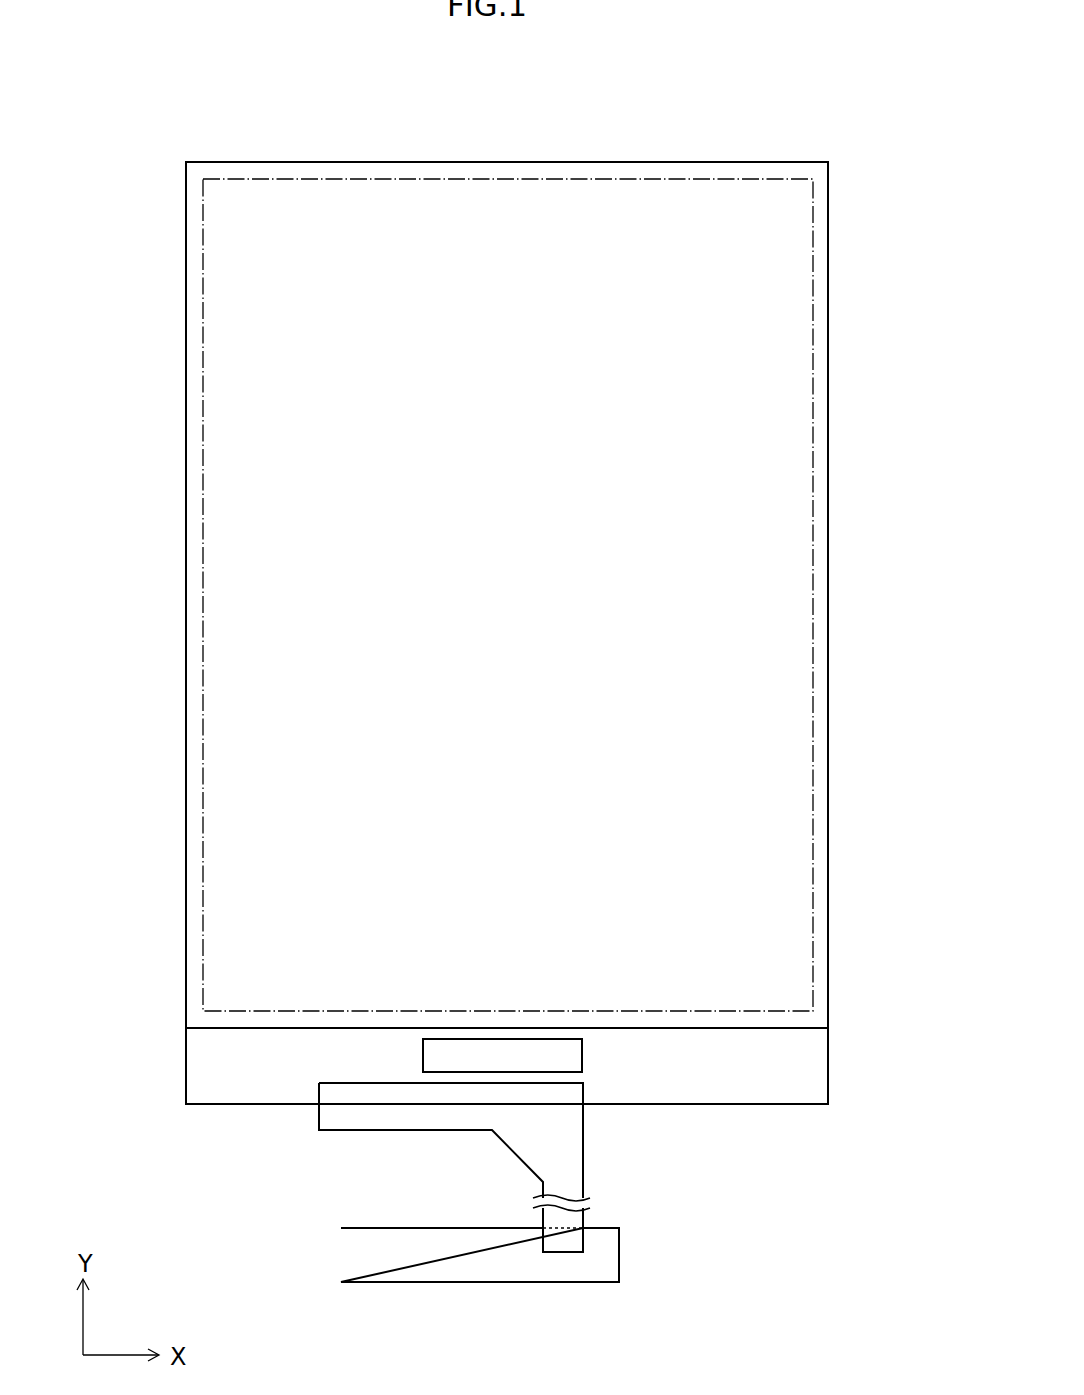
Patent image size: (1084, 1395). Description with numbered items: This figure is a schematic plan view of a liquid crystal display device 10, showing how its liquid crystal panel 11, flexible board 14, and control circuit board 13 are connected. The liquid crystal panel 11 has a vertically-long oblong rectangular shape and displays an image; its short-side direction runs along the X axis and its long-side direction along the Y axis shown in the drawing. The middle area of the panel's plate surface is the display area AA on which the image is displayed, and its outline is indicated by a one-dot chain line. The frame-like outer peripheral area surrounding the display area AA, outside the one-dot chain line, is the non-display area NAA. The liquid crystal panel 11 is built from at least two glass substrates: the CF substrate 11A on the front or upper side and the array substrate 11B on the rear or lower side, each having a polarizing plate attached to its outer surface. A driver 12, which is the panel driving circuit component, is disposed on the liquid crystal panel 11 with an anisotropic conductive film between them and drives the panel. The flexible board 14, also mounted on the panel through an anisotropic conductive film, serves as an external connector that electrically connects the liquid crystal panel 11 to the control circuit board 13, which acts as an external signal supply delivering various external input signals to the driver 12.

The liquid crystal display device 10 is at (842, 151).
The liquid crystal panel 11 is at (829, 254).
The display area AA is at (762, 365).
The non-display area NAA is at (821, 426).
The CF substrate 11A is at (816, 1016).
The array substrate 11B is at (813, 1067).
The driver 12 is at (555, 1058).
The flexible board 14 is at (567, 1163).
The control circuit board 13 is at (603, 1258).